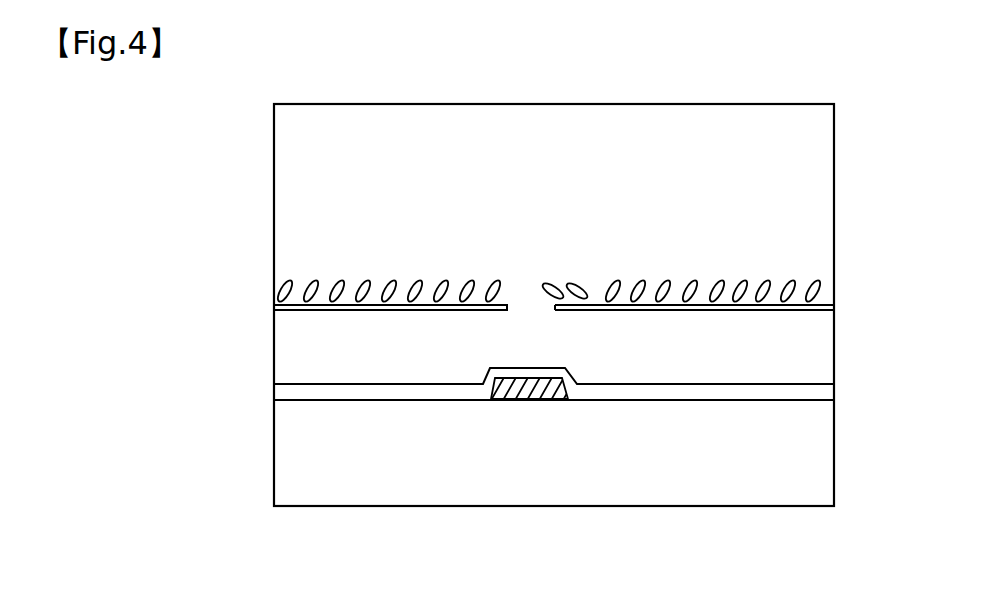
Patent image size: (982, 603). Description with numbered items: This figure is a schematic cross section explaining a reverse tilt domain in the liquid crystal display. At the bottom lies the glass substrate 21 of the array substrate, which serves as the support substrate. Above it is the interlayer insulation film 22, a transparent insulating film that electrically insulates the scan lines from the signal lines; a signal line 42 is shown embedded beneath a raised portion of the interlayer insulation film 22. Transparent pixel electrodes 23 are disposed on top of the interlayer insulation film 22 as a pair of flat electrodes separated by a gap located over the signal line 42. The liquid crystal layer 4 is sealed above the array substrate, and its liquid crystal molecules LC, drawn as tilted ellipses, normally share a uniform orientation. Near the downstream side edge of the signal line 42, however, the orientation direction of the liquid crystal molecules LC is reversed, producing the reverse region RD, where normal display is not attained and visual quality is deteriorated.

The liquid crystal layer 4 is at (287, 194).
The glass substrate 21 is at (817, 455).
The interlayer insulation film 22 is at (298, 377).
The pixel electrode 23 is at (339, 310).
The signal line 42 is at (543, 400).
The liquid crystal molecules LC is at (722, 288).
The reverse region RD is at (625, 270).